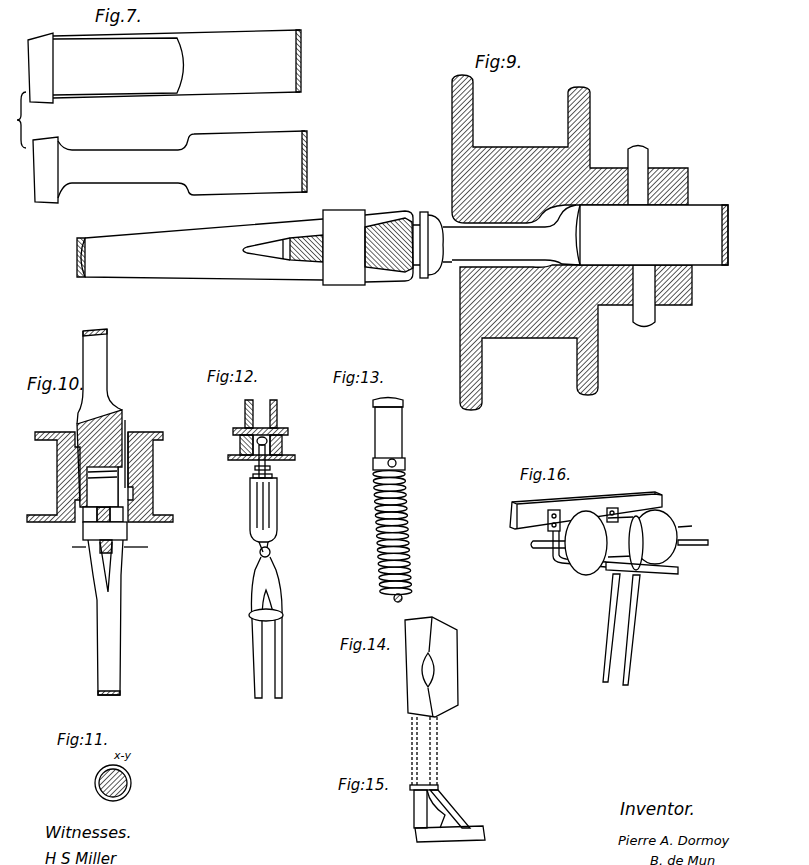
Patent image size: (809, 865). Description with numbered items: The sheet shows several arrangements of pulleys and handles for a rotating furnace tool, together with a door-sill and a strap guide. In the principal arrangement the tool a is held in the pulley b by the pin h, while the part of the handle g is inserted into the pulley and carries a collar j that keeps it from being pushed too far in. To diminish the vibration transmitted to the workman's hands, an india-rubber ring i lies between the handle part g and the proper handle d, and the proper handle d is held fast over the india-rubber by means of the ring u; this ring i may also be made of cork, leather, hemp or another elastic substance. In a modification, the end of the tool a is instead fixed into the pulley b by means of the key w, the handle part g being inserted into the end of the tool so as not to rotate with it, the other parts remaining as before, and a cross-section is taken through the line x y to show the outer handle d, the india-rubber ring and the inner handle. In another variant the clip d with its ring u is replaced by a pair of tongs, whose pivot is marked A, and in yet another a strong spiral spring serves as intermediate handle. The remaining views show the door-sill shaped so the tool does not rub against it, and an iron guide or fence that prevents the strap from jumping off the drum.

In FIG. 9, the tool a is at (652, 235).
In FIG. 10, the tool a is at (99, 376).
In FIG. 9, the pulley b is at (572, 242).
In FIG. 10, the pulley b is at (100, 477).
In FIG. 9, the part of the handle g is at (516, 235).
In FIG. 10, the part of the handle g is at (102, 487).
In FIG. 13, the part of the handle g is at (389, 434).
In FIG. 9, the pin h is at (641, 236).
In FIG. 7, the proper handle d is at (200, 249).
In FIG. 10, the proper handle d is at (105, 617).
In FIG. 11, the proper handle d is at (114, 783).
In FIG. 7, the ring u is at (344, 247).
In FIG. 10, the ring u is at (105, 531).
In FIG. 7, the india-rubber ring i is at (392, 246).
In FIG. 7, the collar j is at (436, 245).
In FIG. 10, the key w is at (125, 422).
In FIG. 10, the section line x y x is at (73, 548).
In FIG. 10, the section line x y is at (140, 547).
In FIG. 12, the pivot A is at (268, 588).